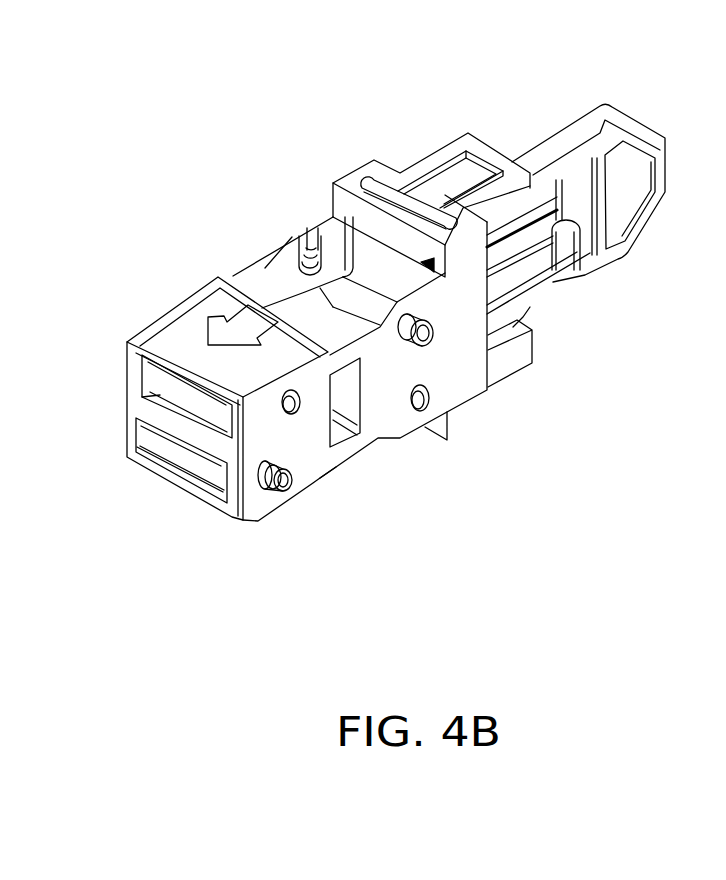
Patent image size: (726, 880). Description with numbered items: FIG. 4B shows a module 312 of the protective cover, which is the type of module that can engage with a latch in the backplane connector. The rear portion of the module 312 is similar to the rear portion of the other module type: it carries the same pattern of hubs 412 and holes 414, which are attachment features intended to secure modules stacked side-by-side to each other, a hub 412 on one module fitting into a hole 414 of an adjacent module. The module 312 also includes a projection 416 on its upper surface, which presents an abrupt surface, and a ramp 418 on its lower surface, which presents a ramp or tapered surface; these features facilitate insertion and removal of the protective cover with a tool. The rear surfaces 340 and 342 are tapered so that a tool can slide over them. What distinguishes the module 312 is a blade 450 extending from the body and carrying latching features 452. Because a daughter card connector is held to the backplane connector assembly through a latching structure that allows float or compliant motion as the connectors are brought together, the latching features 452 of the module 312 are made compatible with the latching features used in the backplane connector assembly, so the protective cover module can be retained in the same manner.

The module 312 is at (180, 504).
The rear surface 340 is at (248, 521).
The rear surface 342 is at (128, 338).
The hub 412 is at (290, 487).
The hole 414 is at (432, 398).
The projection 416 is at (330, 352).
The ramp 418 is at (318, 478).
The blade 450 is at (603, 103).
The latching features 452 is at (585, 272).